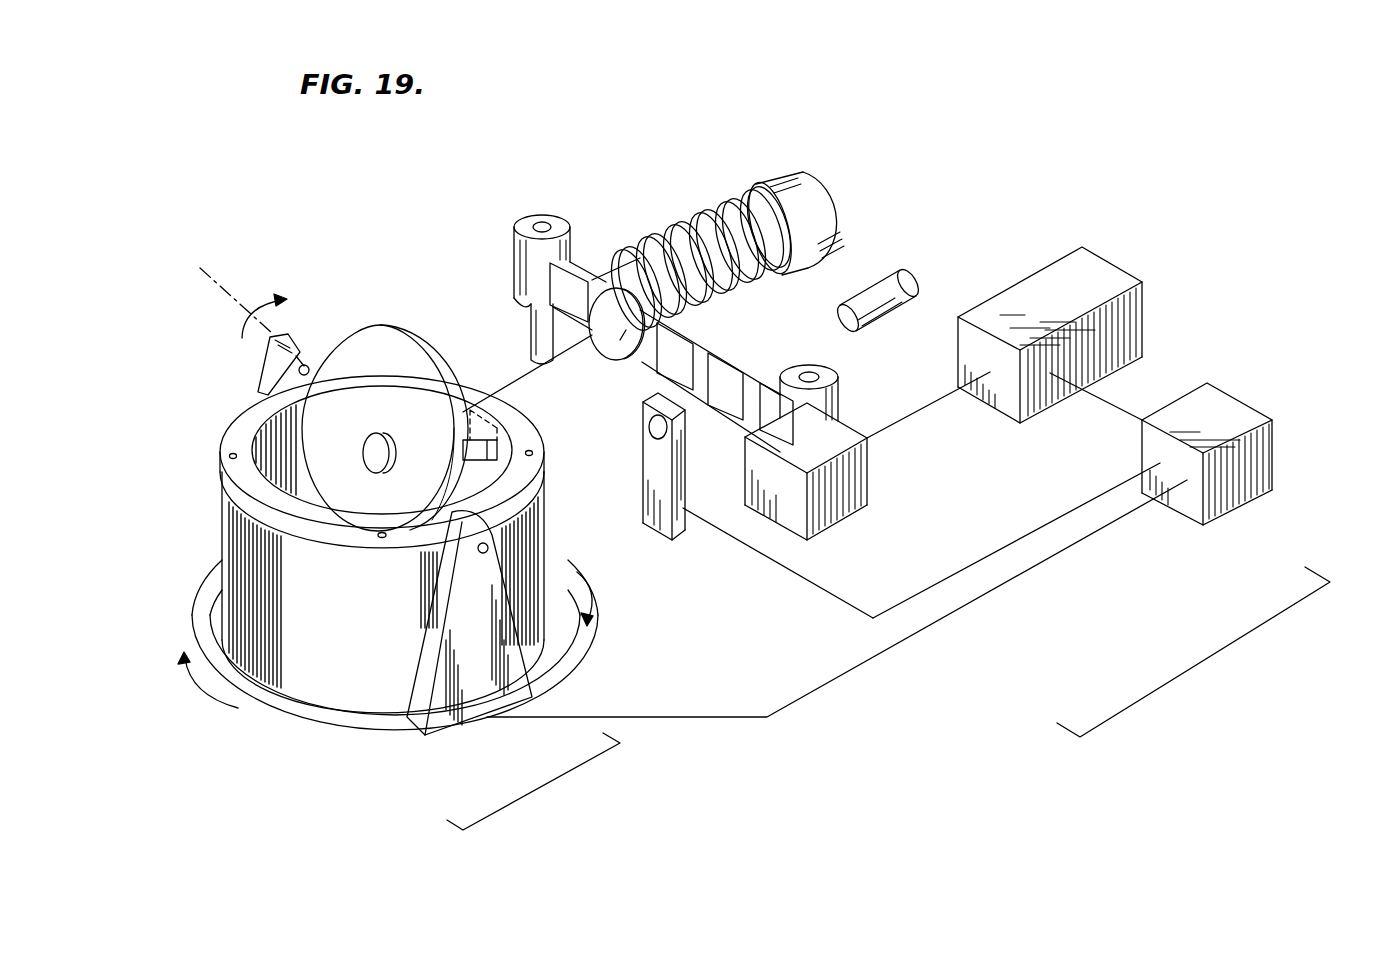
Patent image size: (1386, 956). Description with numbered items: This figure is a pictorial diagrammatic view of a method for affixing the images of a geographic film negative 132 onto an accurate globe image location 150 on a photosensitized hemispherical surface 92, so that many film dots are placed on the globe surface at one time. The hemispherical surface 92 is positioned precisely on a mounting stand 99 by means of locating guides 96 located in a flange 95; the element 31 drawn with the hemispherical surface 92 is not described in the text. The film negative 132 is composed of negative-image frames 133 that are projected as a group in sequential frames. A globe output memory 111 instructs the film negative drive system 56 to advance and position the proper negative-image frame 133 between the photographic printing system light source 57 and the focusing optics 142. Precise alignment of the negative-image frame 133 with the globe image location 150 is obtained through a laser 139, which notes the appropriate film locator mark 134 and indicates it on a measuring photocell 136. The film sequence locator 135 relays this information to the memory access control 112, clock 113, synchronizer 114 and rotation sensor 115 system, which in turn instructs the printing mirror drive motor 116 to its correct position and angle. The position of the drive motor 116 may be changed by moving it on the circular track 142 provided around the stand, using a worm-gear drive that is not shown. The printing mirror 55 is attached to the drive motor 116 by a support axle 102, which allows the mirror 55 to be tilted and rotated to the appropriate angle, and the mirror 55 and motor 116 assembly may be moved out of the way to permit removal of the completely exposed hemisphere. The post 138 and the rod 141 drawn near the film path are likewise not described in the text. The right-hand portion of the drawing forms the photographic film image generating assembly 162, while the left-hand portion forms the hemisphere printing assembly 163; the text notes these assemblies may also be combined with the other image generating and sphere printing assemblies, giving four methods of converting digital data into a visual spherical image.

The turret plate 31 is at (282, 463).
The photosensitized hemispherical surface 92 is at (363, 462).
The printing mirror 55 is at (385, 428).
The film negative drive system 56 is at (847, 523).
The photographic printing system light source 57 is at (787, 176).
The flange 95 is at (342, 533).
The locating guides 96 is at (229, 456).
The mounting stand 99 is at (221, 521).
The support axle 102 is at (308, 364).
The globe output memory 111 is at (1083, 256).
The memory access control 112 is at (1238, 459).
The clock 113 is at (1238, 459).
The synchronizer 114 is at (1238, 459).
The rotation sensor 115 is at (1273, 448).
The printing mirror drive motor 116 is at (469, 623).
The film negative 132 is at (722, 403).
The negative-image frames 133 is at (722, 368).
The film locator mark 134 is at (700, 348).
The film sequence locator 135 is at (631, 498).
The measuring photocell 136 is at (656, 427).
The post 138 is at (531, 322).
The laser 139 is at (897, 270).
The rod 141 is at (517, 383).
The focusing optics / circular track 142 is at (332, 722).
The globe image location 150 is at (490, 440).
The photographic film image generating assembly 162 is at (1193, 652).
The hemisphere printing assembly 163 is at (533, 781).